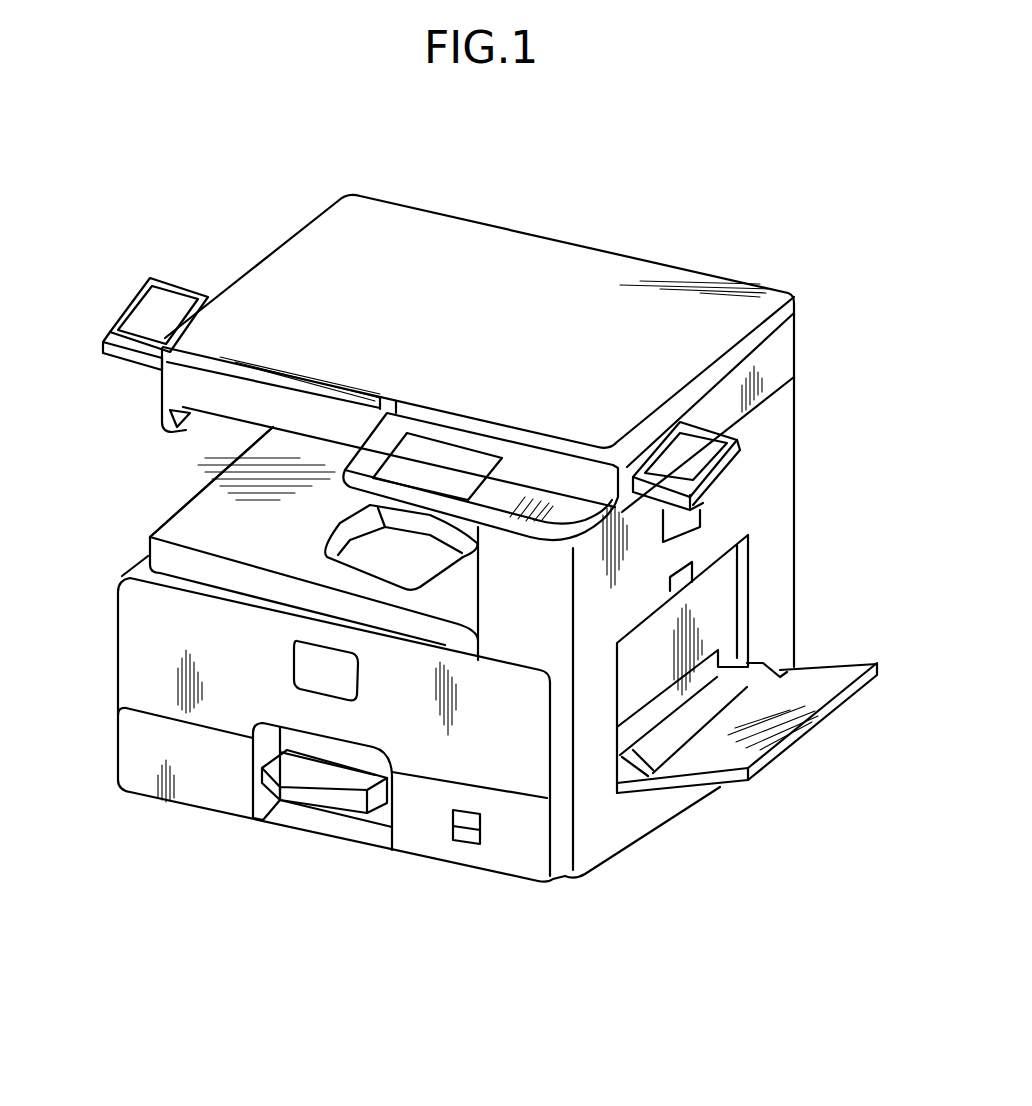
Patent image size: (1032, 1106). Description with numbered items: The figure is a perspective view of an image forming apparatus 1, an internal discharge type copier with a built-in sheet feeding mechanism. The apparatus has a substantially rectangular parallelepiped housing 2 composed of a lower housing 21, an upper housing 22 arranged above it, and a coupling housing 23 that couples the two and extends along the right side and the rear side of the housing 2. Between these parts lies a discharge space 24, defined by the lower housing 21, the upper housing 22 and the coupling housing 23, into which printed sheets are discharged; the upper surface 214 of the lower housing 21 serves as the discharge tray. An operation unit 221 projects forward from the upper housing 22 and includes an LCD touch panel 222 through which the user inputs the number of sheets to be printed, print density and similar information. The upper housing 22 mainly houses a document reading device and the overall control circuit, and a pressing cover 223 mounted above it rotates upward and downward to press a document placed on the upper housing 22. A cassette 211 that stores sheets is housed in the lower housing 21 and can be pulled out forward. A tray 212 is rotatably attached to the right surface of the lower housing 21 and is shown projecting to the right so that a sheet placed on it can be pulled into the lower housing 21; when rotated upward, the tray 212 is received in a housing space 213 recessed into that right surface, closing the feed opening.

The image forming apparatus 1 is at (768, 232).
The housing 2 is at (797, 449).
The lower housing 21 is at (117, 670).
The cassette 211 is at (418, 833).
The tray 212 is at (813, 677).
The housing space 213 is at (718, 584).
The upper surface 214 is at (197, 517).
The upper housing 22 is at (158, 387).
The operation unit 221 is at (528, 480).
The LCD touch panel 222 is at (430, 450).
The pressing cover 223 is at (777, 325).
The coupling housing 23 is at (503, 613).
The discharge space 24 is at (240, 447).